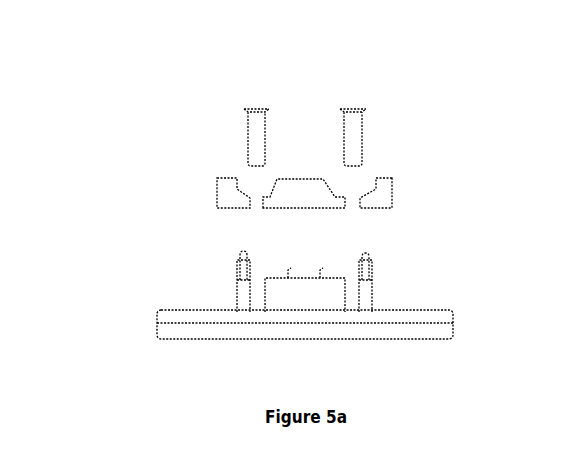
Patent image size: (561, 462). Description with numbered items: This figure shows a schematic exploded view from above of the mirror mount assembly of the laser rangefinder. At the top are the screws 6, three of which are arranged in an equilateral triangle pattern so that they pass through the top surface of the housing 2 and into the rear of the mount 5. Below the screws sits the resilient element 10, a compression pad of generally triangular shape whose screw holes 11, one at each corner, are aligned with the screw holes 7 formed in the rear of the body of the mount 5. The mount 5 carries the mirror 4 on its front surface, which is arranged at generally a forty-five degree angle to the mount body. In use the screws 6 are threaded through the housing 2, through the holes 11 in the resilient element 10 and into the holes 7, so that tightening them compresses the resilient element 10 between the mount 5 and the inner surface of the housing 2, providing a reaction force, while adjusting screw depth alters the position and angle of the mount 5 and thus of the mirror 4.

The housing 2 is at (241, 148).
The mirror 4 is at (190, 330).
The mount 5 is at (255, 243).
The screws 6 is at (350, 118).
The screw holes 7 is at (352, 290).
The resilient element 10 is at (368, 255).
The screw holes 11 is at (358, 192).